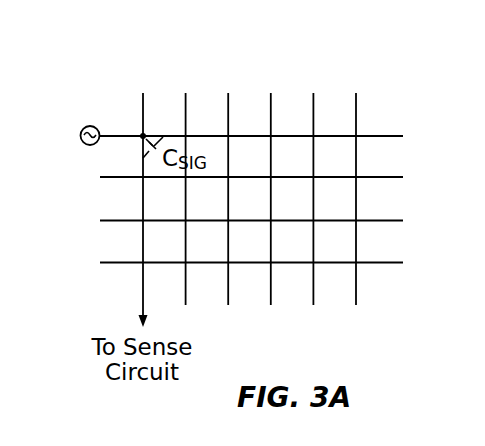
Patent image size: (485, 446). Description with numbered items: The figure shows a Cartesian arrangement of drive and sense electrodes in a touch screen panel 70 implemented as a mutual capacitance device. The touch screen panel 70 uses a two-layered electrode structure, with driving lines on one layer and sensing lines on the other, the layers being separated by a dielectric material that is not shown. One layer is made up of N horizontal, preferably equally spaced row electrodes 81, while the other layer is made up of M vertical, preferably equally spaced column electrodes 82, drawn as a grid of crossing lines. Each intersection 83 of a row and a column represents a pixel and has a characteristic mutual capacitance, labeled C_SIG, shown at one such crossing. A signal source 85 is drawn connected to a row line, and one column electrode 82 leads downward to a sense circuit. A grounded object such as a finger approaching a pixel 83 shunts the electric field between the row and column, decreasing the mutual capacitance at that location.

The touch screen panel 70 is at (255, 184).
The row electrodes 81 is at (377, 177).
The column electrodes 82 is at (140, 297).
The intersection 83 is at (142, 133).
The signal source 85 is at (90, 125).